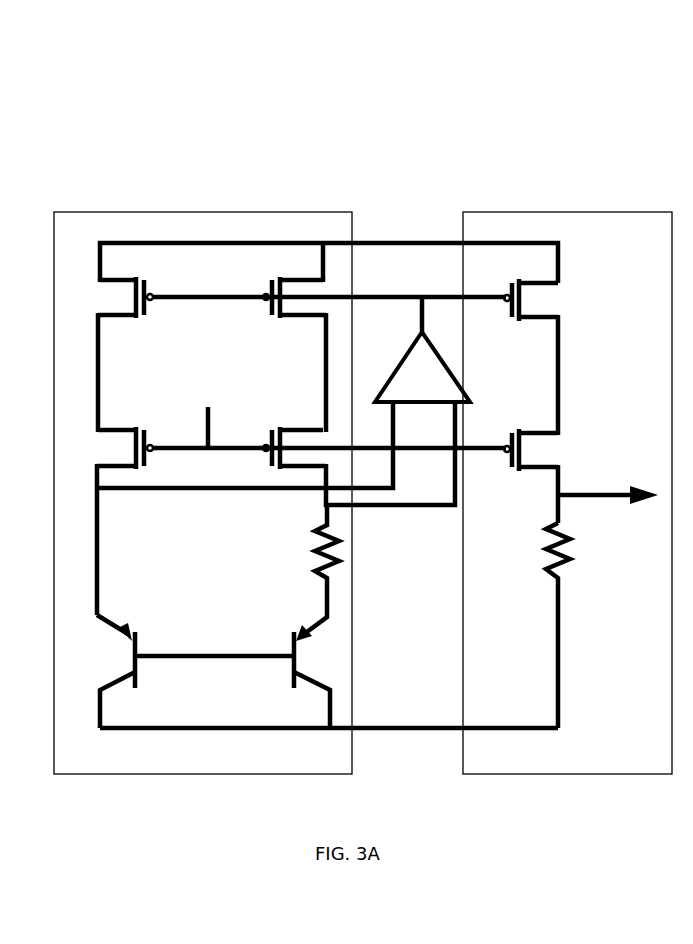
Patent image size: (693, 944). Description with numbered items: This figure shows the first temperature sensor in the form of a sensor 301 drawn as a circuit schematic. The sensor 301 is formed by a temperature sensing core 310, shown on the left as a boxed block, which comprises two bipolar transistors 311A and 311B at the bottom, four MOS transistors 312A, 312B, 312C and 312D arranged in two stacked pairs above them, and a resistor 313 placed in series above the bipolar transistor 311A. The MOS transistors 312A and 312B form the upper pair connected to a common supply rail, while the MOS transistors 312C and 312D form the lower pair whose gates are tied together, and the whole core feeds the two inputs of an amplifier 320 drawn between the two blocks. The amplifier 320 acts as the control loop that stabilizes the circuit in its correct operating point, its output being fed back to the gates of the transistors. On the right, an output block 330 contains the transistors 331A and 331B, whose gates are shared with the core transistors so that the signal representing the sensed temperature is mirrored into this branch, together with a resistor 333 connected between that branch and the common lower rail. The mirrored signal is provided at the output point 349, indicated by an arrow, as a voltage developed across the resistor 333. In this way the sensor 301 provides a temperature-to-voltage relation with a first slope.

The sensor 301 is at (331, 159).
The temperature sensing core 310 is at (110, 765).
The bipolar transistor 311A is at (288, 648).
The bipolar transistor 311B is at (137, 647).
The MOS transistor 312A is at (112, 318).
The MOS transistor 312B is at (293, 318).
The MOS transistor 312C is at (112, 427).
The MOS transistor 312D is at (300, 427).
The resistor 313 is at (317, 550).
The amplifier 320 is at (445, 393).
The output stage 330 is at (655, 760).
The transistor 331A is at (540, 303).
The transistor 331B is at (538, 453).
The resistor 333 is at (540, 558).
The output point 349 is at (617, 498).